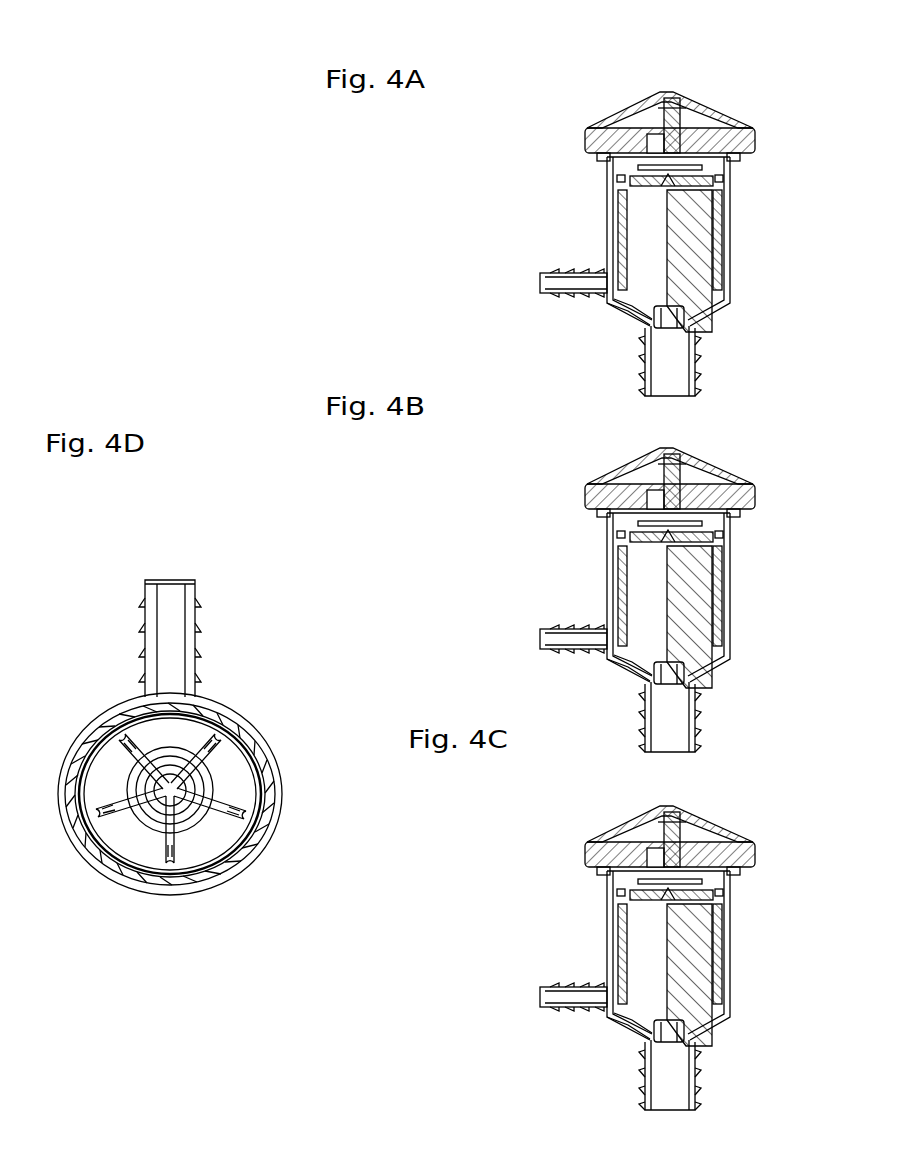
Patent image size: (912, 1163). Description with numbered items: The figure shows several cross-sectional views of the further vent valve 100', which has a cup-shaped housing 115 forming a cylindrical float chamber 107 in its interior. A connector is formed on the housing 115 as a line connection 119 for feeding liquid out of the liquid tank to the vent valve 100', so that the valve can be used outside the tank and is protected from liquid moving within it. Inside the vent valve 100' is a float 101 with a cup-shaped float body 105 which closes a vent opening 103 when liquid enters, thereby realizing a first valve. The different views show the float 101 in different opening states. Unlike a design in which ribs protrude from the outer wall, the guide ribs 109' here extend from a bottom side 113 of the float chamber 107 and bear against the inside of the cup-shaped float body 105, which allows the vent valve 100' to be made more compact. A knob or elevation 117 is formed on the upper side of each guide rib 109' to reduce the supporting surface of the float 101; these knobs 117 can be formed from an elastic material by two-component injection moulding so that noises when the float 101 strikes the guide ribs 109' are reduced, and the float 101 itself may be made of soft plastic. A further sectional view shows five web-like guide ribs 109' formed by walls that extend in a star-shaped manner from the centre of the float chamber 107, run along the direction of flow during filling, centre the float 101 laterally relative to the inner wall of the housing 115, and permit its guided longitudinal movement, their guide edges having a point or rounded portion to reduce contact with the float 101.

In FIG. 4A, the vent valve 100' is at (628, 222).
In FIG. 4B, the vent valve 100' is at (629, 564).
In FIG. 4C, the vent valve 100' is at (613, 920).
In FIG. 4D, the vent valve 100' is at (218, 739).
In FIG. 4A, the float 101 is at (609, 226).
In FIG. 4B, the float 101 is at (599, 597).
In FIG. 4C, the float 101 is at (599, 955).
In FIG. 4D, the float 101 is at (243, 863).
In FIG. 4A, the vent opening 103 is at (658, 152).
In FIG. 4B, the vent opening 103 is at (633, 443).
In FIG. 4C, the vent opening 103 is at (633, 799).
In FIG. 4A, the float body 105 is at (722, 181).
In FIG. 4A, the float chamber 107 is at (622, 160).
In FIG. 4B, the float chamber 107 is at (646, 464).
In FIG. 4C, the float chamber 107 is at (645, 821).
In FIG. 4D, the float chamber 107 is at (268, 782).
In FIG. 4A, the guide ribs 109' is at (669, 261).
In FIG. 4B, the guide ribs 109' is at (669, 621).
In FIG. 4C, the guide ribs 109' is at (666, 982).
In FIG. 4D, the guide ribs 109' is at (201, 816).
In FIG. 4A, the bottom side of the float chamber 113 is at (720, 308).
In FIG. 4A, the housing 115 is at (607, 256).
In FIG. 4D, the housing 115 is at (262, 860).
In FIG. 4B, the knob or elevation 117 is at (715, 554).
In FIG. 4A, the line connection 119 is at (643, 345).